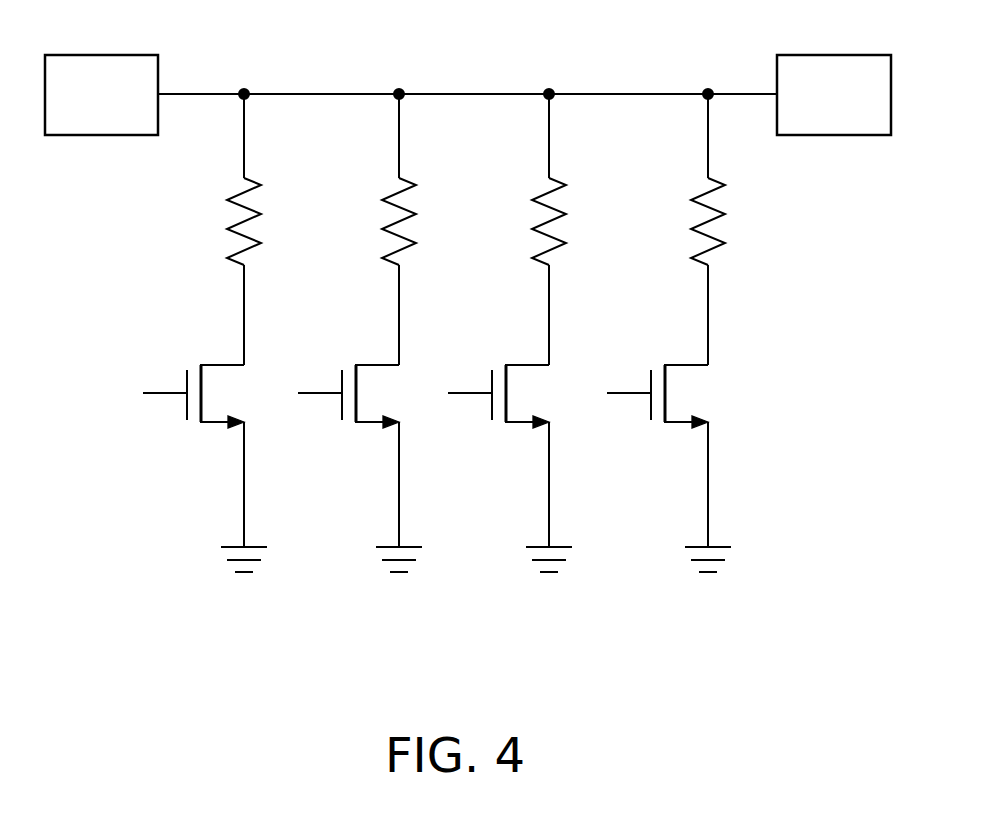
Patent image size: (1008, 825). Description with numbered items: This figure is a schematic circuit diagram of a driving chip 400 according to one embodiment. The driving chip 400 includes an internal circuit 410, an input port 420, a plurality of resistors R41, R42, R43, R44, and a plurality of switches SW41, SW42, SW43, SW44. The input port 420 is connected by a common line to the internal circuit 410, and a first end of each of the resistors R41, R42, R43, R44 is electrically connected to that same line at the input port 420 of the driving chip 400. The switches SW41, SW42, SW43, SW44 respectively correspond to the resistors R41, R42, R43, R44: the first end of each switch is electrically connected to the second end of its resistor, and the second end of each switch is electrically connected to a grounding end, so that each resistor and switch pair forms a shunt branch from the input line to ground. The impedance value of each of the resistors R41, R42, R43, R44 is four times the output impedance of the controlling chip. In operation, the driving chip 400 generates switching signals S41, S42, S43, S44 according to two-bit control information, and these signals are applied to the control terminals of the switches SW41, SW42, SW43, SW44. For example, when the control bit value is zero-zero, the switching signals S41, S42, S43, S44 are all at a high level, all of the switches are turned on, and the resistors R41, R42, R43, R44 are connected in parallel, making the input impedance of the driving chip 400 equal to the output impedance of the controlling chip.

The driving chip 400 is at (840, 656).
The internal circuit 410 is at (833, 55).
The input port 420 is at (102, 55).
The resistor R41 is at (270, 221).
The resistor R42 is at (425, 221).
The resistor R43 is at (575, 221).
The resistor R44 is at (734, 221).
The switch SW41 is at (213, 416).
The switch SW42 is at (368, 416).
The switch SW43 is at (518, 416).
The switch SW44 is at (677, 416).
The switching signal S41 is at (146, 394).
The switching signal S42 is at (301, 394).
The switching signal S43 is at (451, 394).
The switching signal S44 is at (610, 394).